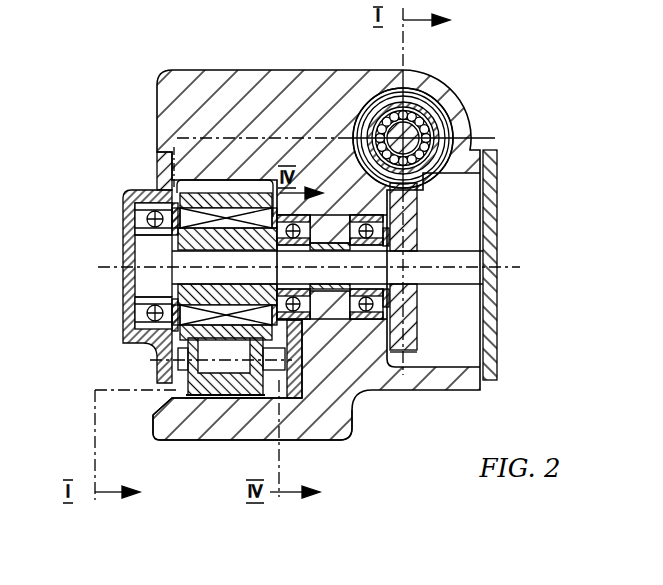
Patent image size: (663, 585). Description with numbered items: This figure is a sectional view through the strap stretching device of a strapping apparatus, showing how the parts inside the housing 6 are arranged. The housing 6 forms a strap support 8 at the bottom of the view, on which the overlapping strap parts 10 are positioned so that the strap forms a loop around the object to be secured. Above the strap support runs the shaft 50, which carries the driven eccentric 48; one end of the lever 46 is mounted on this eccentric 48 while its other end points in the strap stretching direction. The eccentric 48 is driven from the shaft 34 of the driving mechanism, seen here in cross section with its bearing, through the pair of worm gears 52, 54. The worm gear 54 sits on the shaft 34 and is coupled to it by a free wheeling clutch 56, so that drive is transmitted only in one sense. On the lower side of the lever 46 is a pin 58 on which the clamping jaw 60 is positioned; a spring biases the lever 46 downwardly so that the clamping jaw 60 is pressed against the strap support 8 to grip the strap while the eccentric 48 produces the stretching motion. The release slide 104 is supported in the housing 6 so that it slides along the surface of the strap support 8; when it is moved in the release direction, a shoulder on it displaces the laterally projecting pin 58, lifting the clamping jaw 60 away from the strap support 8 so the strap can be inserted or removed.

The housing 6 is at (170, 93).
The strap support 8 is at (168, 428).
The strap part 10 is at (200, 402).
The shaft 34 is at (458, 128).
The lever 46 is at (157, 353).
The eccentric 48 is at (178, 252).
The shaft 50 is at (183, 277).
The worm gear 52 is at (410, 313).
The worm gear 54 is at (420, 184).
The free wheeling clutch 56 is at (437, 178).
The pin 58 is at (300, 352).
The clamping jaw 60 is at (202, 382).
The release slide 104 is at (283, 368).